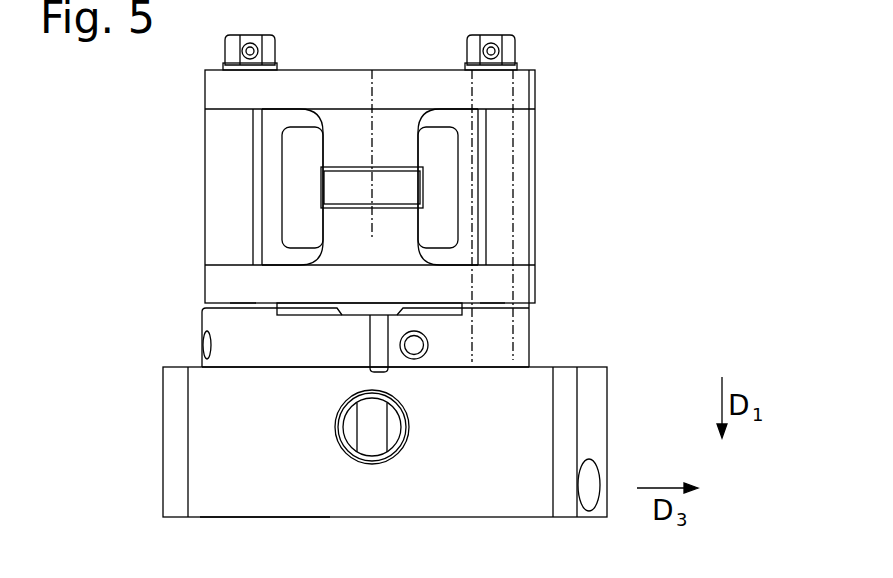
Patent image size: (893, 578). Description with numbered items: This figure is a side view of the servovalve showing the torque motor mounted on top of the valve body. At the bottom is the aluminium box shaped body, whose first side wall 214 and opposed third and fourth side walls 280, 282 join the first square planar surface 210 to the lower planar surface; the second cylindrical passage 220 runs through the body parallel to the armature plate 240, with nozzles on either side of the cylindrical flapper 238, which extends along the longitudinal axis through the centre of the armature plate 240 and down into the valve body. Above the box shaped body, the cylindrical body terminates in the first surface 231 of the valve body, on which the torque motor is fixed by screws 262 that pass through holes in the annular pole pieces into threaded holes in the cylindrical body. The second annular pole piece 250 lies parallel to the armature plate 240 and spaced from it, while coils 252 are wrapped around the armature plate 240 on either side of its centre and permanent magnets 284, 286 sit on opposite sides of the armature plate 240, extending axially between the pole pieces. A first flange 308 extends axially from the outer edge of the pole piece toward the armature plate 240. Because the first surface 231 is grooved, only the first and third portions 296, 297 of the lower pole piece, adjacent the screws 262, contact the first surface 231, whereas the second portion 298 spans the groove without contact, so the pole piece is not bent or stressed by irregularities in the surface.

The first square planar surface 210 is at (590, 367).
The first side wall 214 is at (257, 500).
The second cylindrical passage 220 is at (402, 447).
The first surface 231 is at (540, 305).
The flapper 238 is at (367, 450).
The armature plate 240 is at (330, 182).
The second annular pole piece 250 is at (520, 90).
The coils 252 is at (465, 202).
The screws 262 is at (267, 52).
The third side wall 280 is at (607, 450).
The fourth side wall 282 is at (163, 437).
The permanent magnet 284 is at (230, 150).
The permanent magnet 286 is at (500, 153).
The first portion of the pole piece 296 is at (243, 303).
The third portion of the pole piece 297 is at (492, 305).
The second portion of the pole piece 298 is at (462, 303).
The first flange 308 is at (333, 225).